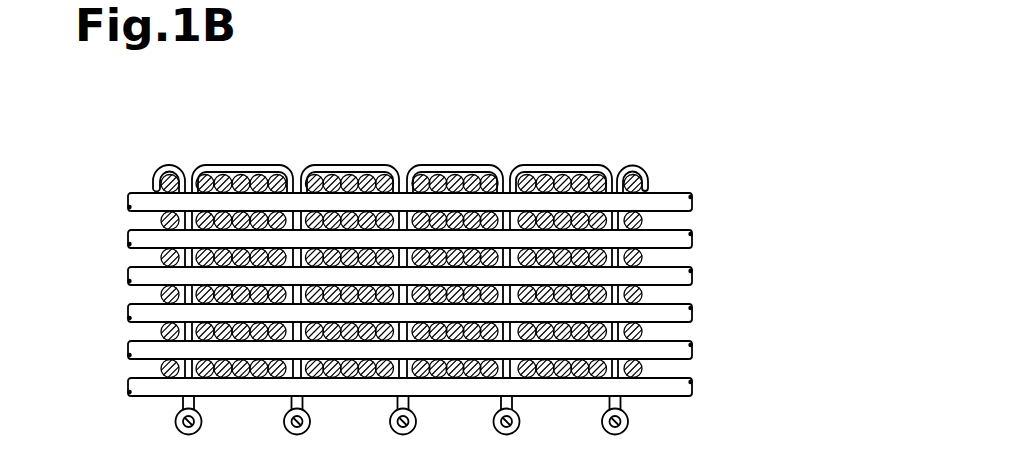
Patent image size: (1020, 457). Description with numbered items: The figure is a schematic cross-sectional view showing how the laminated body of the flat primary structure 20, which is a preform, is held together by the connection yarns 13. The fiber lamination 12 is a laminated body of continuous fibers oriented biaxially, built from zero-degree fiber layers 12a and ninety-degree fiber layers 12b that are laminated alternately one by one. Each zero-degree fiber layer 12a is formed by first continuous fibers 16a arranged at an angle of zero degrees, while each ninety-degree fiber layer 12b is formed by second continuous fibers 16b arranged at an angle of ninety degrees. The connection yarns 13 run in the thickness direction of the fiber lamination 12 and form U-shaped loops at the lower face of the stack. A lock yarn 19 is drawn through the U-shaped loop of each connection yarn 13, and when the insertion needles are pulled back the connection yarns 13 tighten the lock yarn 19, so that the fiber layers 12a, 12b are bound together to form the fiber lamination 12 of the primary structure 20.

The primary structure 20 is at (176, 145).
The fiber lamination 12 is at (826, 160).
The 0-degree fiber layers 12a is at (687, 185).
The 90-degree fiber layers 12b is at (701, 202).
The first continuous fibers 16a is at (168, 257).
The second continuous fibers 16b is at (128, 392).
The lock yarn 19 is at (283, 424).
The connection yarns 13 is at (622, 403).